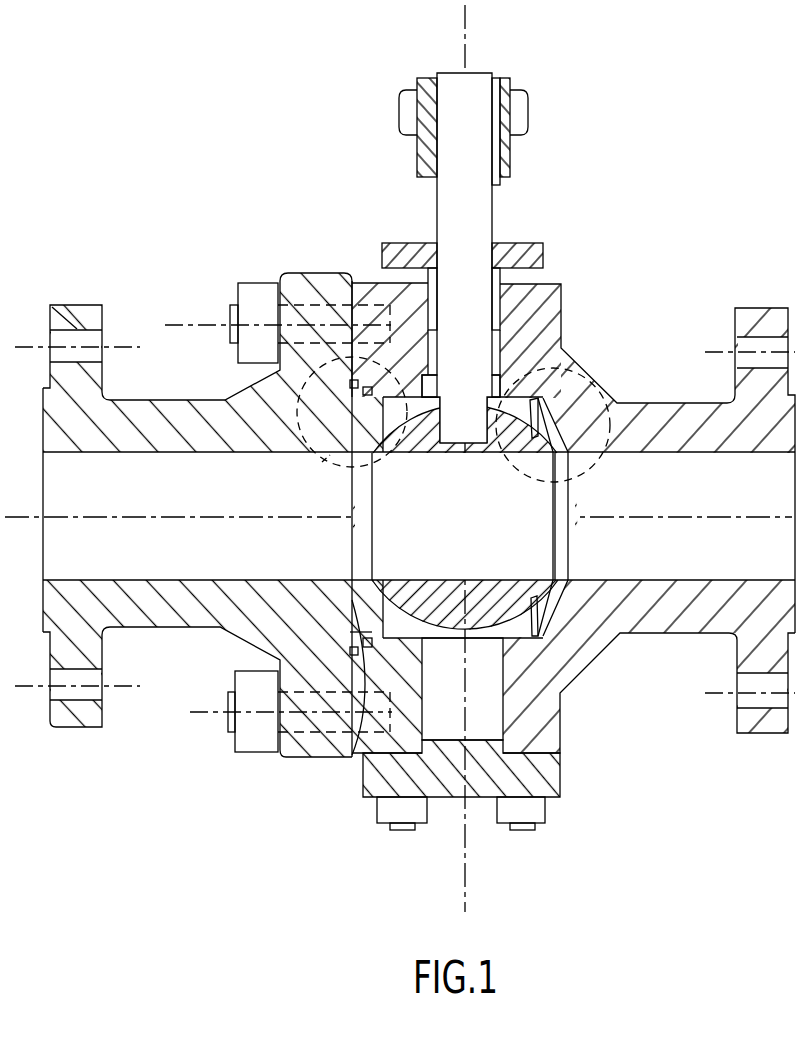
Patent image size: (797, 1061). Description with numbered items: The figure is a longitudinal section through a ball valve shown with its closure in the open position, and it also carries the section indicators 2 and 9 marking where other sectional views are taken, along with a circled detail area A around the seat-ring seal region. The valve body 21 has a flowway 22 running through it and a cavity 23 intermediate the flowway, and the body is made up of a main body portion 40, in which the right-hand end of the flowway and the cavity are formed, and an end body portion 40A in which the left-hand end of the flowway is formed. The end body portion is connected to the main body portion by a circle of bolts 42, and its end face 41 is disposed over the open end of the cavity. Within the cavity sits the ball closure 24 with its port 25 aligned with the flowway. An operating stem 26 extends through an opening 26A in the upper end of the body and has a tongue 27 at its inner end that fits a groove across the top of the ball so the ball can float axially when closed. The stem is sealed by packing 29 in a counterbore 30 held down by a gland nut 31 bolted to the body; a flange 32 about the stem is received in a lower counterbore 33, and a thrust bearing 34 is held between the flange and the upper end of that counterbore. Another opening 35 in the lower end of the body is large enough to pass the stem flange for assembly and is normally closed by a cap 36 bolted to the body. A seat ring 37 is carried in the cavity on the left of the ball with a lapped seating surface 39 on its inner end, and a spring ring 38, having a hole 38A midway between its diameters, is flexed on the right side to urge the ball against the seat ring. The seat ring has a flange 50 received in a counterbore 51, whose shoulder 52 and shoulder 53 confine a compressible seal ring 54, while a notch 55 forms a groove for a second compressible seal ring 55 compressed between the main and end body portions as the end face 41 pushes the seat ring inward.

The valve body 21 is at (595, 667).
The flowway 22 is at (683, 455).
The cavity 23 is at (494, 420).
The ball closure 24 is at (512, 612).
The port 25 is at (420, 580).
The operating stem 26 is at (493, 207).
The opening 26A is at (436, 345).
The tongue 27 is at (418, 420).
The packing 29 is at (510, 289).
The counterbore 30 is at (440, 305).
The gland nut 31 is at (520, 244).
The flange 32 is at (530, 398).
The lower counterbore 33 is at (443, 391).
The thrust bearing 34 is at (501, 370).
The opening 35 is at (424, 686).
The cap 36 is at (558, 800).
The seat ring 37 is at (345, 602).
The spring ring 38 is at (490, 603).
The hole 38A is at (558, 384).
The seating surface 39 is at (387, 580).
The main body portion 40 is at (662, 403).
The end body portion 40A is at (145, 400).
The end face 41 is at (350, 757).
The bolts 42 is at (230, 322).
The flange 50 is at (352, 667).
The counterbore 51 is at (352, 627).
The shoulder 52 is at (352, 408).
The shoulder 53 is at (362, 393).
The compressible seal ring 54 is at (366, 643).
The notch 55 is at (352, 651).
The detail area A is at (322, 462).
The section line 2- 2 is at (482, 21).
The section line 9- 9 is at (270, 500).